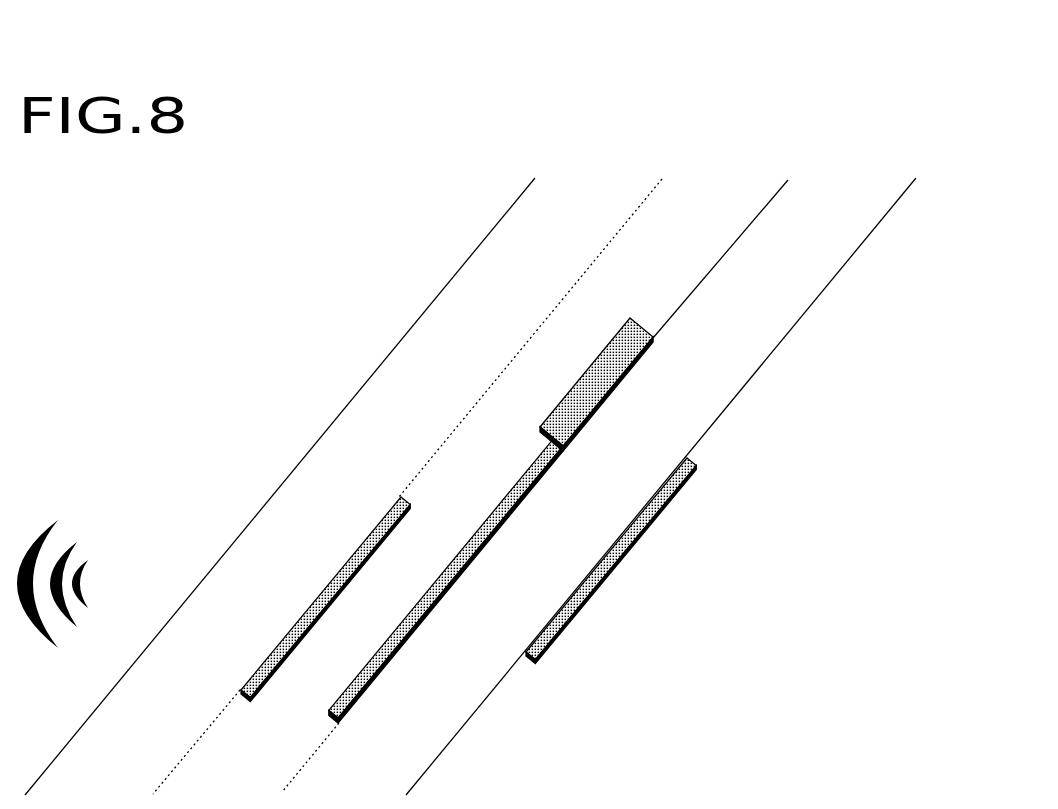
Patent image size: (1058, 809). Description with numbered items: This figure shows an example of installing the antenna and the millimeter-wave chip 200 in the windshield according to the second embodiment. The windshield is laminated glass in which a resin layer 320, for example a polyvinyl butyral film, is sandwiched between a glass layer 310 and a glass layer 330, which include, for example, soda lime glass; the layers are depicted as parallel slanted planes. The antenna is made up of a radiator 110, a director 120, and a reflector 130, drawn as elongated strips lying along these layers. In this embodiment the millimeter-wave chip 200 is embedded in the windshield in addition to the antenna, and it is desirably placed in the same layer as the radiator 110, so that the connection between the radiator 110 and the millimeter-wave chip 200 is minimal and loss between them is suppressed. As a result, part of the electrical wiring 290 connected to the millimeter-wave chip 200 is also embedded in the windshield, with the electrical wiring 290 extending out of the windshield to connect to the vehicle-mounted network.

The radiator 110 is at (447, 592).
The director 120 is at (328, 608).
The reflector 130 is at (652, 525).
The millimeter-wave chip 200 is at (627, 377).
The electrical wiring 290 is at (717, 265).
The glass layer 310 is at (460, 298).
The resin layer 320 is at (587, 298).
The glass layer 330 is at (852, 235).